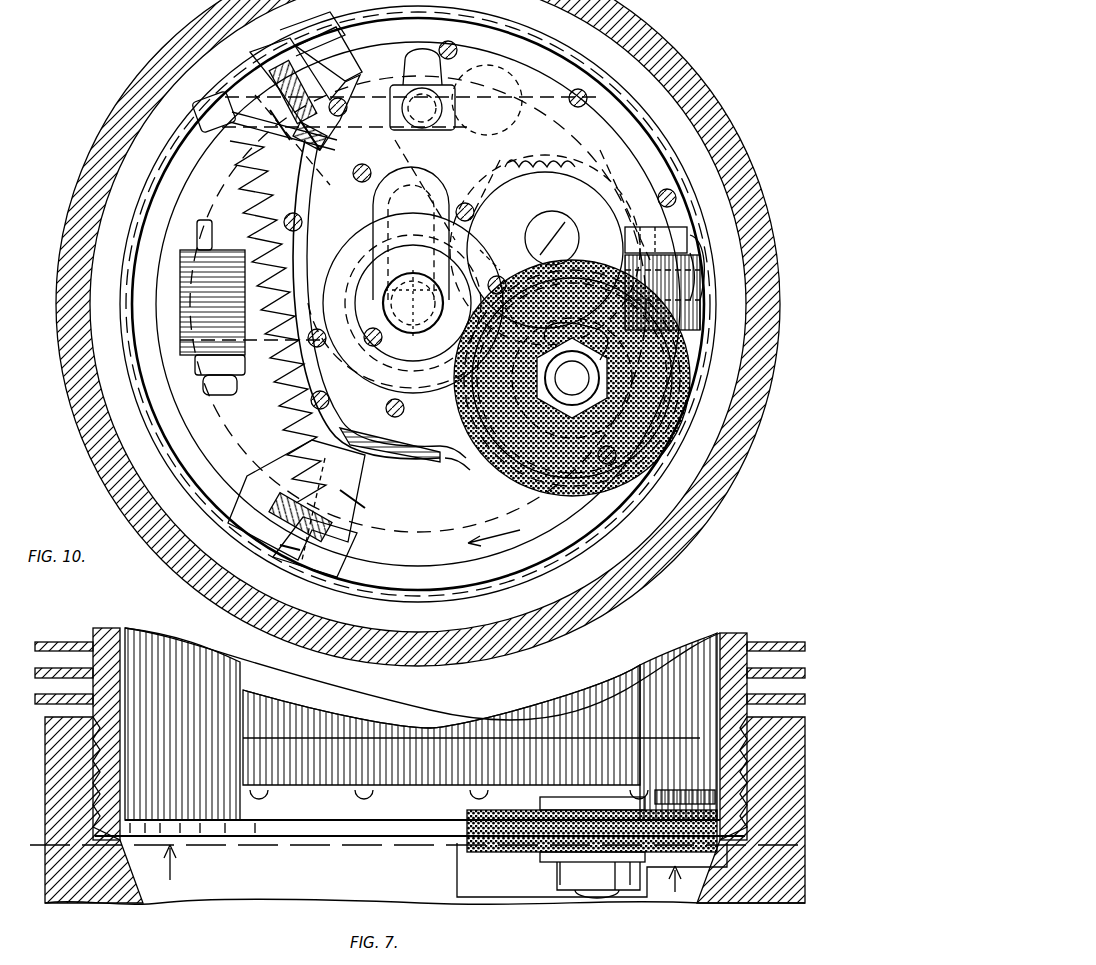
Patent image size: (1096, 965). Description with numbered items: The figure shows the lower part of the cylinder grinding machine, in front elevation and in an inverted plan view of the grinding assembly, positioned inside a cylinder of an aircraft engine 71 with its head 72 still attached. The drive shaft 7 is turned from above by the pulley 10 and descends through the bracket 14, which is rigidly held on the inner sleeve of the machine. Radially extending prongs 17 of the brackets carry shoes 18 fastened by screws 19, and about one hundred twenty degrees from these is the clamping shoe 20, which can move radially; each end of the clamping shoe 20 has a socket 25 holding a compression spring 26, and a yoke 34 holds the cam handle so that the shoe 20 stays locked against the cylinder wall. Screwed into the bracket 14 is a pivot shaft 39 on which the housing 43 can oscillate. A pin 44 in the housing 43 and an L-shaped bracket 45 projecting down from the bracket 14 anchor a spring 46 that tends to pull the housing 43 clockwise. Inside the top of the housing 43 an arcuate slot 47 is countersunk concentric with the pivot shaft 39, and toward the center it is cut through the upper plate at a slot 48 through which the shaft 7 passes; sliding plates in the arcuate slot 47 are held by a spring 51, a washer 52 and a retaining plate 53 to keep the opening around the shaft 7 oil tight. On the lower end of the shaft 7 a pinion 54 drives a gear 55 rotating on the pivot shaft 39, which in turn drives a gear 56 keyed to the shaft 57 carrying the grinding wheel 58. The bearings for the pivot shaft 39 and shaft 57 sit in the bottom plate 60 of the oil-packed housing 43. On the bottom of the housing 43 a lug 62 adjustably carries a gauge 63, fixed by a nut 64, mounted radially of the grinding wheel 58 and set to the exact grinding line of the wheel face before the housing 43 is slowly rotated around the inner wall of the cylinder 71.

In FIG. 10, the shaft 7 is at (410, 280).
In FIG. 7, the pulley 10 is at (420, 872).
In FIG. 10, the bracket 14 is at (365, 445).
In FIG. 10, the prongs 17 is at (345, 82).
In FIG. 10, the shoes 18 is at (357, 44).
In FIG. 10, the screws 19 is at (335, 48).
In FIG. 10, the clamping shoe 20 is at (762, 270).
In FIG. 10, the socket 25 is at (708, 245).
In FIG. 10, the compression spring 26 is at (705, 300).
In FIG. 10, the yoke 34 is at (700, 230).
In FIG. 10, the pivot shaft 39 is at (570, 230).
In FIG. 10, the housing 43 is at (488, 48).
In FIG. 7, the housing 43 is at (452, 720).
In FIG. 10, the pin 44 is at (243, 123).
In FIG. 10, the L-shaped bracket 45 is at (418, 475).
In FIG. 10, the spring 46 is at (272, 398).
In FIG. 10, the arcuate slot 47 is at (492, 135).
In FIG. 10, the slot 48 is at (440, 205).
In FIG. 10, the spring 51 is at (428, 351).
In FIG. 10, the washer 52 is at (378, 305).
In FIG. 10, the retaining plate 53 is at (455, 125).
In FIG. 10, the pinion 54 is at (520, 245).
In FIG. 10, the gear 55 is at (556, 160).
In FIG. 10, the gear 56 is at (572, 480).
In FIG. 10, the shaft 57 is at (520, 470).
In FIG. 7, the shaft 57 is at (590, 897).
In FIG. 7, the grinding wheel 58 is at (467, 818).
In FIG. 7, the bottom plate 60 is at (335, 775).
In FIG. 10, the lug 62 is at (620, 490).
In FIG. 10, the gauge 63 is at (668, 450).
In FIG. 10, the nut 64 is at (640, 470).
In FIG. 7, the cylinder of an aircraft engine 71 is at (740, 630).
In FIG. 7, the head 72 is at (775, 878).